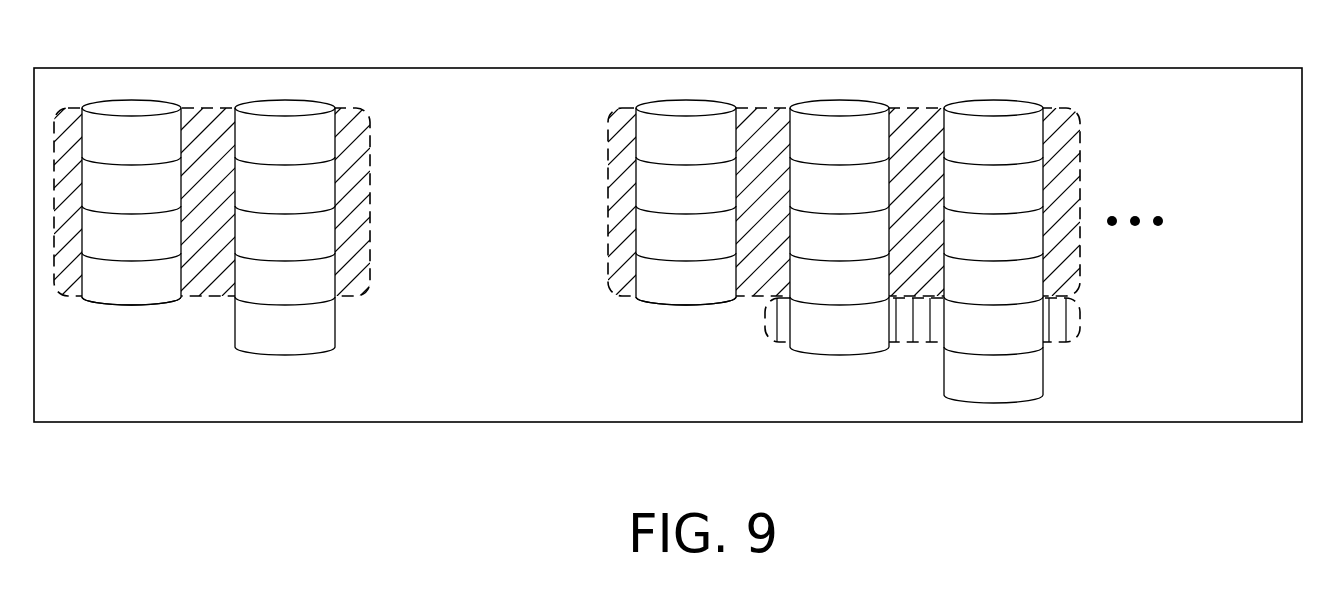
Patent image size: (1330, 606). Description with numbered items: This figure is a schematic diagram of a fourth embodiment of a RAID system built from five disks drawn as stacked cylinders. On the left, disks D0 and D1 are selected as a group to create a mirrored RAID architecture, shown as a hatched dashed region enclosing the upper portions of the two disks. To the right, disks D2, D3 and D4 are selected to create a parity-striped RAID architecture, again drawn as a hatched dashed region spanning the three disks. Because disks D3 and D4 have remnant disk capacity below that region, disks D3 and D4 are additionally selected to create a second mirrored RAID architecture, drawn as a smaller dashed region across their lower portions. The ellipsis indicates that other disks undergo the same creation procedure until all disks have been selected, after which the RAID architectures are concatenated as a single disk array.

The disk D0 is at (134, 106).
The disk D1 is at (285, 106).
The disk D2 is at (688, 106).
The disk D3 is at (838, 106).
The disk D4 is at (991, 106).